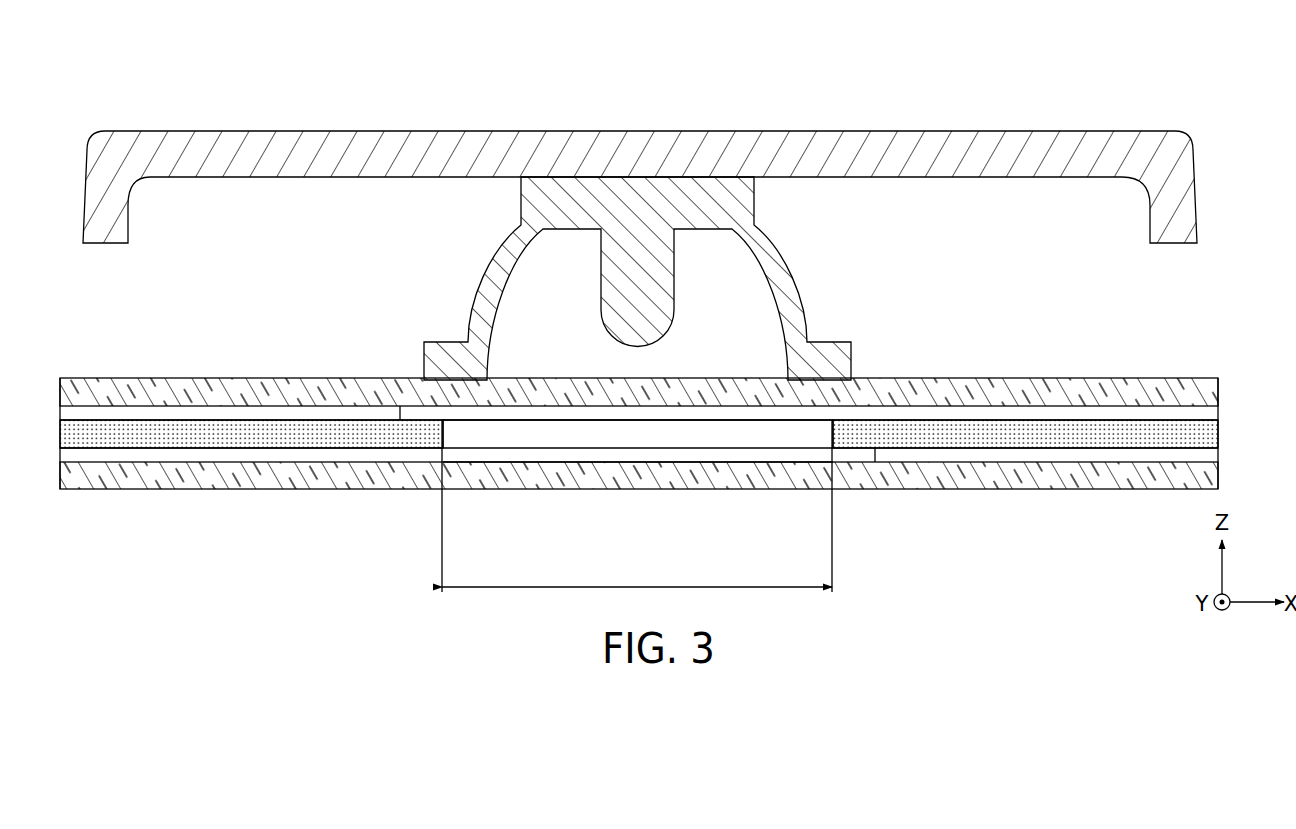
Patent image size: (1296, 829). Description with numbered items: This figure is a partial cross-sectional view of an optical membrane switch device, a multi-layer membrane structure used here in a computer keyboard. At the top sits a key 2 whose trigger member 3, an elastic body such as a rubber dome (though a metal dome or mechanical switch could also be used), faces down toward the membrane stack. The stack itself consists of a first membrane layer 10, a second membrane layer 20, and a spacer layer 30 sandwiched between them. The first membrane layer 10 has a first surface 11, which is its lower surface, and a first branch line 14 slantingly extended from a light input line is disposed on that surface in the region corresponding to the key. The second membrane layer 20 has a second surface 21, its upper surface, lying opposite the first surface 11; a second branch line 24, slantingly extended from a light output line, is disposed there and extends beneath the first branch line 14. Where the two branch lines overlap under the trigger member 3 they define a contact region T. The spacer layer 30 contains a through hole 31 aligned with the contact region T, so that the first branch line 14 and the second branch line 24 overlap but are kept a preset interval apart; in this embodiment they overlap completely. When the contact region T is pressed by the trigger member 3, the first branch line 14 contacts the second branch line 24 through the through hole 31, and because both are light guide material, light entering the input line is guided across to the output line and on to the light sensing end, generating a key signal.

The key 2 is at (1010, 142).
The trigger member 3 is at (520, 226).
The first membrane layer 10 is at (1108, 390).
The first surface 11 is at (1053, 407).
The first branch line 14 is at (515, 415).
The second membrane layer 20 is at (140, 482).
The second surface 21 is at (170, 462).
The second branch line 24 is at (624, 452).
The spacer layer 30 is at (965, 437).
The through hole 31 is at (770, 433).
The contact region T is at (795, 588).